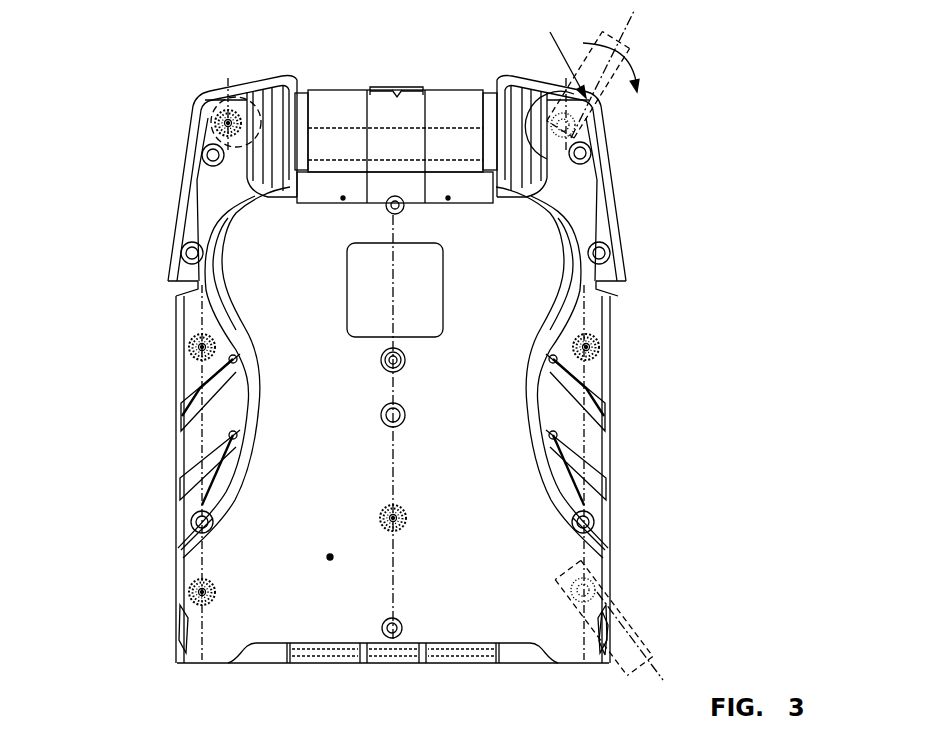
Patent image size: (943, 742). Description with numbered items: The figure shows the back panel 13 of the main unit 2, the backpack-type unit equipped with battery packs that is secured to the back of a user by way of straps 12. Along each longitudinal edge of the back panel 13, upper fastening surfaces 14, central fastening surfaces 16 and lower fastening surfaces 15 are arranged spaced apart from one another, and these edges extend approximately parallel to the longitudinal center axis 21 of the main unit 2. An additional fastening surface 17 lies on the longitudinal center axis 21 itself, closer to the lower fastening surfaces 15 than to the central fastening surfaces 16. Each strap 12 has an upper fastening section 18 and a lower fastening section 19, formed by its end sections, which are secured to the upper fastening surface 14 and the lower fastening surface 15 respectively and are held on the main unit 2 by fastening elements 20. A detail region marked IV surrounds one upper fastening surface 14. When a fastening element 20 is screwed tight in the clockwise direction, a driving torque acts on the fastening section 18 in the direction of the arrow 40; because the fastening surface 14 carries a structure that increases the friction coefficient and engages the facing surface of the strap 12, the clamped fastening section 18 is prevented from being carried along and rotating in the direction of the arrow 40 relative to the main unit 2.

The main unit 2 is at (174, 205).
The detail view IV is at (238, 98).
The strap 12 is at (636, 42).
The back panel 13 is at (330, 557).
The upper fastening surface 14 is at (220, 122).
The lower fastening surface 15 is at (190, 582).
The central fastening surface 16 is at (192, 346).
The fastening surface 17 is at (404, 527).
The upper fastening section 18 is at (559, 55).
The lower fastening section 19 is at (592, 614).
The fastening element 20 is at (577, 129).
The longitudinal center axis 21 is at (398, 461).
The arrow 40 is at (628, 52).